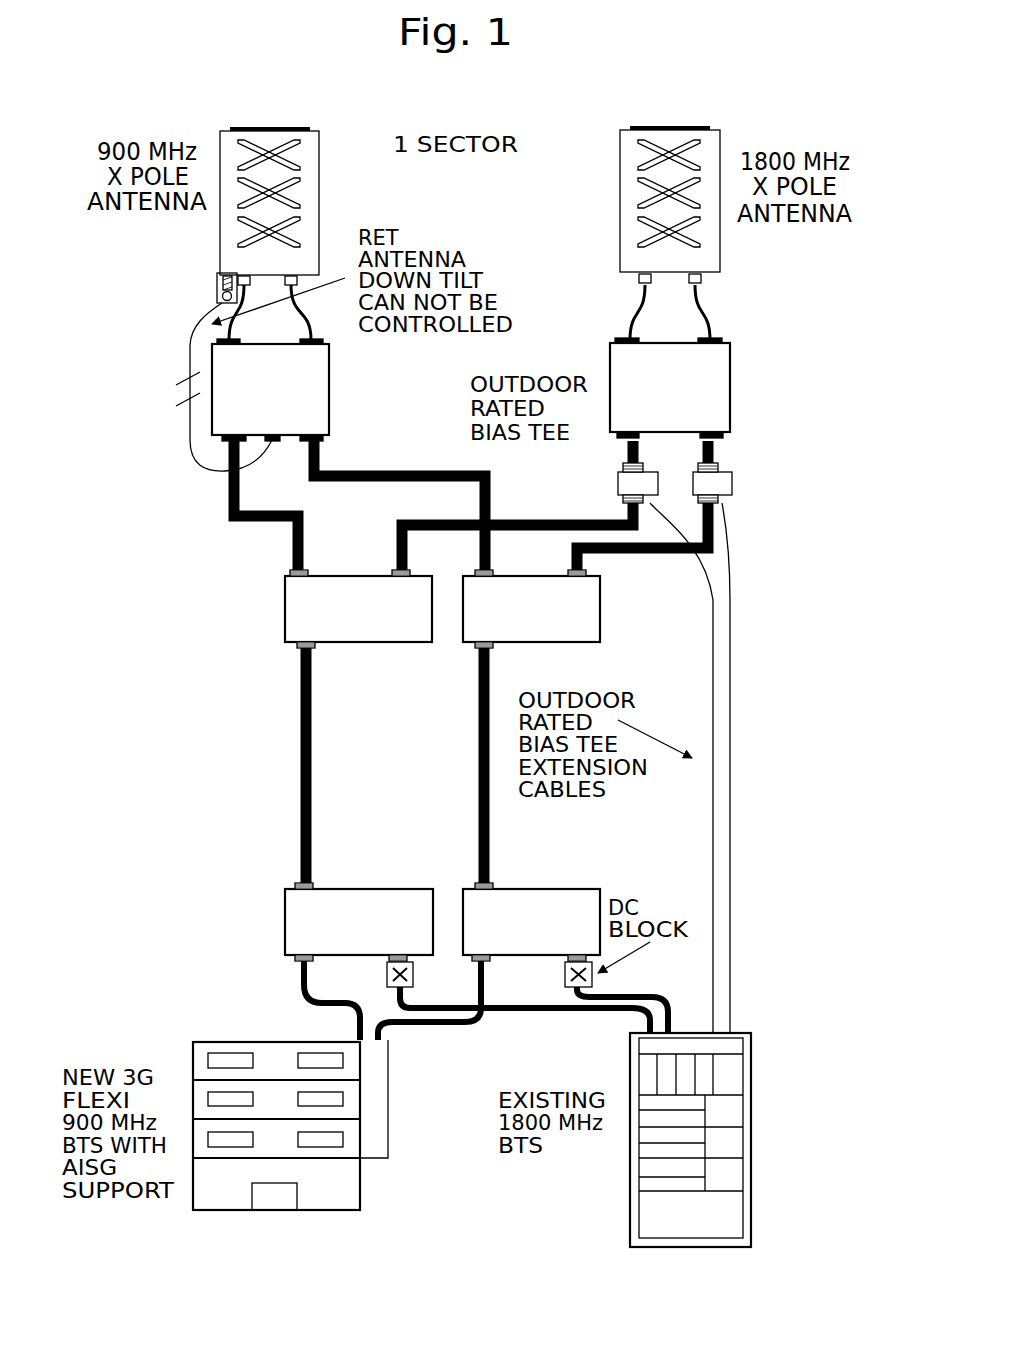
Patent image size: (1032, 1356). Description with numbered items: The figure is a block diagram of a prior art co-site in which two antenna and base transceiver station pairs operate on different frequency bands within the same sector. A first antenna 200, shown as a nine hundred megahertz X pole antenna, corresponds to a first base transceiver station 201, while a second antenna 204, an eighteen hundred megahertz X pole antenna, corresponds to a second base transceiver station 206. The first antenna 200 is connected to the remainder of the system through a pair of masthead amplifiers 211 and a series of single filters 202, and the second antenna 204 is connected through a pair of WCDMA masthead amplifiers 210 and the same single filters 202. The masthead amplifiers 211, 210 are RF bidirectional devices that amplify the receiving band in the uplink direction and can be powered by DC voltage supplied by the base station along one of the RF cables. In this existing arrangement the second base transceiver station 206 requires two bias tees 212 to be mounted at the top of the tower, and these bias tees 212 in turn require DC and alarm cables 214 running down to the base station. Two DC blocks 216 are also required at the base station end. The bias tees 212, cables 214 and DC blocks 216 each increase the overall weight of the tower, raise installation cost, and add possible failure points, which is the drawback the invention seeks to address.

The first antenna 200 is at (285, 128).
The second antenna 204 is at (690, 128).
The second masthead amplifiers 210 is at (645, 437).
The first masthead amplifiers 211 is at (297, 436).
The bias tees 212 is at (731, 490).
The DC and alarm cables 214 is at (731, 823).
The single filters 202 is at (280, 647).
The DC blocks 216 is at (412, 986).
The first base transceiver station 201 is at (251, 1211).
The second base transceiver station 206 is at (630, 1213).